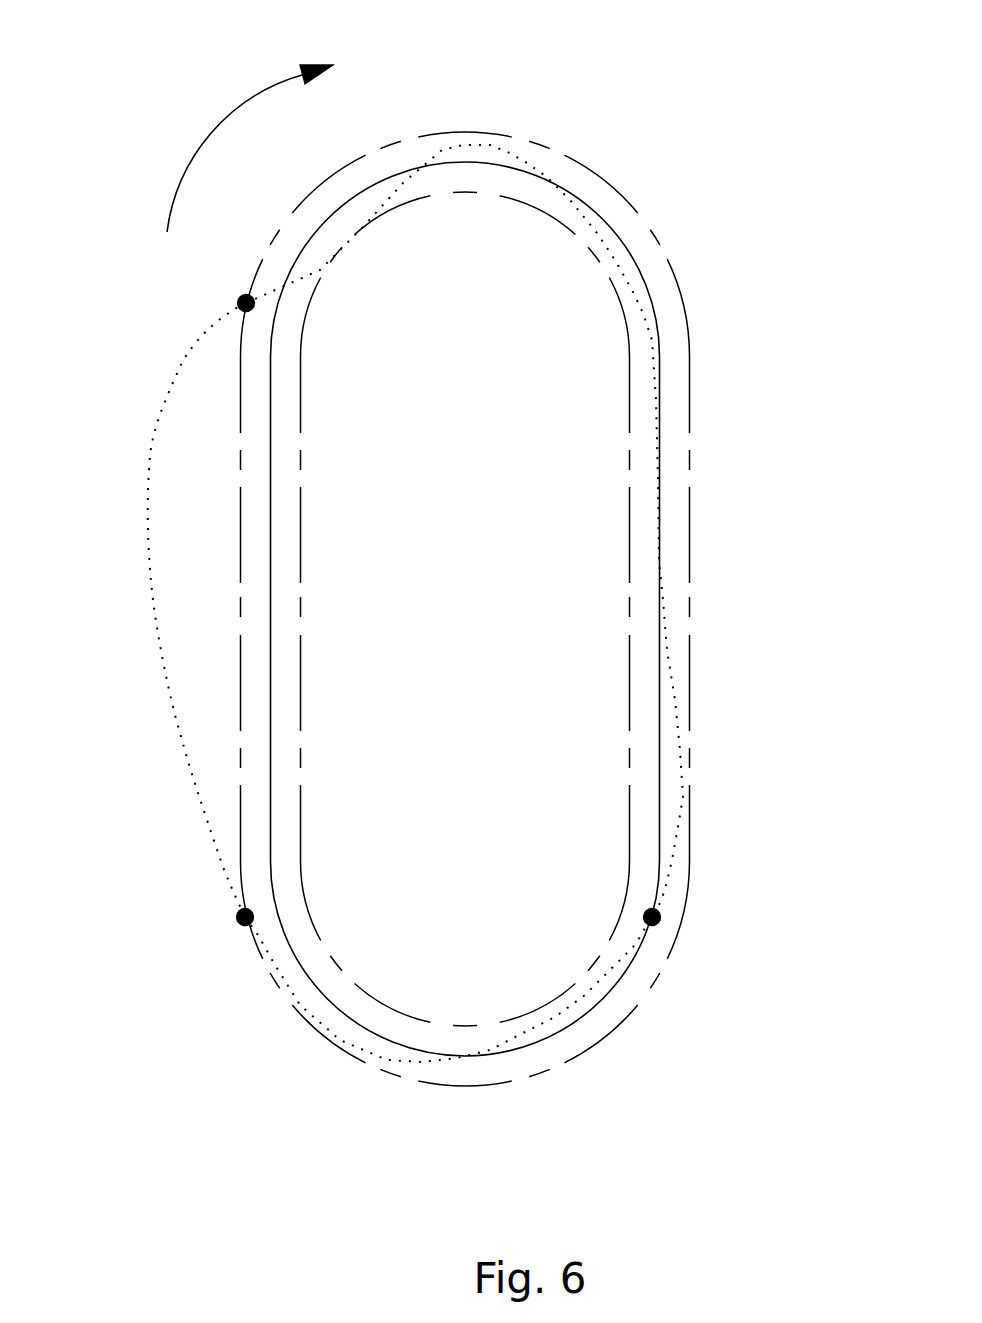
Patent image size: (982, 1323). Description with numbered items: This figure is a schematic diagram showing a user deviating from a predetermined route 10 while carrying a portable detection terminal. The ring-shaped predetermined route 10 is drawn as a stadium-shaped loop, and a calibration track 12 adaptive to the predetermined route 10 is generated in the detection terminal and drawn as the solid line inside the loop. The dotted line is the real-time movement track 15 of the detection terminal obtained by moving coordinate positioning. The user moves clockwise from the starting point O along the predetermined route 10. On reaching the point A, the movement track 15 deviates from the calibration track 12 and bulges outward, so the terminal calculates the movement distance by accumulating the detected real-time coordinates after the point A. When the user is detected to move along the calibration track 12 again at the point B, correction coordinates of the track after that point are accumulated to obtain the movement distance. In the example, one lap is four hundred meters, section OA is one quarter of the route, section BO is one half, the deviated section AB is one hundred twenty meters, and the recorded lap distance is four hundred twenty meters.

The predetermined route 10 is at (672, 332).
The calibration track 12 is at (649, 292).
The movement track 15 is at (518, 157).
The point A is at (175, 917).
The point B is at (95, 303).
The starting point O is at (652, 917).